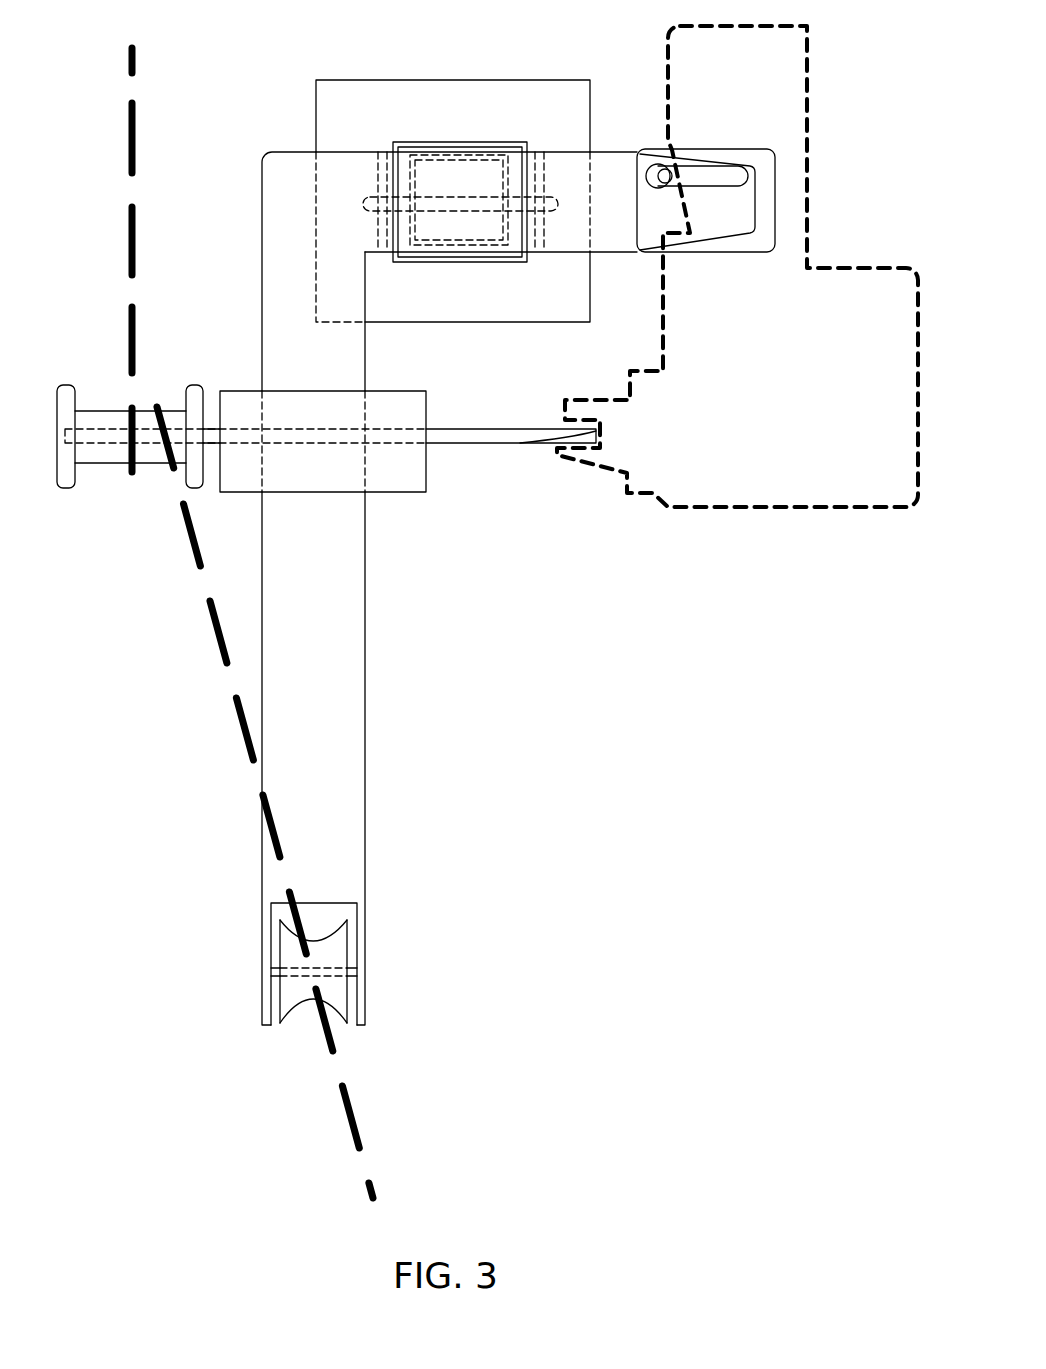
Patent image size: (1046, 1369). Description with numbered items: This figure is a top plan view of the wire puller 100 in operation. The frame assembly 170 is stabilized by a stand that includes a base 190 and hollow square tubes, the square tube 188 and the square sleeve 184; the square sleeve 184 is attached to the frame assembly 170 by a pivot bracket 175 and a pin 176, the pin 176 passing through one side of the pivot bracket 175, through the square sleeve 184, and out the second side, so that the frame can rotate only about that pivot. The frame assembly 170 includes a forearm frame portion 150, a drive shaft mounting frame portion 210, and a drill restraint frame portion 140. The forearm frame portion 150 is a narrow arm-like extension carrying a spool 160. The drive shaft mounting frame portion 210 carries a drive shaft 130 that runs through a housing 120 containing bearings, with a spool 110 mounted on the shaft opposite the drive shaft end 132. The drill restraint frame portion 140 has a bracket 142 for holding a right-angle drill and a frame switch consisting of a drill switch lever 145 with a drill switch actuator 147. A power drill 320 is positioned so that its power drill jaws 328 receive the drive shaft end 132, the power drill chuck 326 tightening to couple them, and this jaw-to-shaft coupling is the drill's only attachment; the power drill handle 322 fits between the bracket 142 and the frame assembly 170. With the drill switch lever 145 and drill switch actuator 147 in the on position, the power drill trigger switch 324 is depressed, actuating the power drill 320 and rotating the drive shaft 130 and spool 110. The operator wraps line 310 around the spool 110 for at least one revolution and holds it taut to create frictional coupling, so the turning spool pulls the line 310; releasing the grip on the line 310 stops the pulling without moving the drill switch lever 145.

The wire puller 100 is at (375, 57).
The spool 110 is at (186, 392).
The housing 120 is at (380, 391).
The drive shaft 130 is at (468, 428).
The drive shaft end 132 is at (523, 445).
The drill restraint frame portion 140 is at (618, 254).
The bracket 142 is at (636, 190).
The drill switch lever 145 is at (652, 165).
The drill switch actuator 147 is at (668, 182).
The forearm frame portion 150 is at (262, 870).
The spool 160 is at (366, 915).
The frame assembly 170 is at (252, 184).
The pivot bracket 175 is at (385, 150).
The pin 176 is at (555, 200).
The square sleeve 184 is at (494, 246).
The hollow square tube 188 is at (435, 142).
The base 190 is at (518, 80).
The drive shaft mounting frame portion 210 is at (262, 348).
The line 310 is at (180, 515).
The power drill 320 is at (856, 519).
The power drill handle 322 is at (712, 26).
The power drill trigger switch 324 is at (690, 223).
The power drill chuck 326 is at (572, 410).
The power drill jaws 328 is at (562, 449).